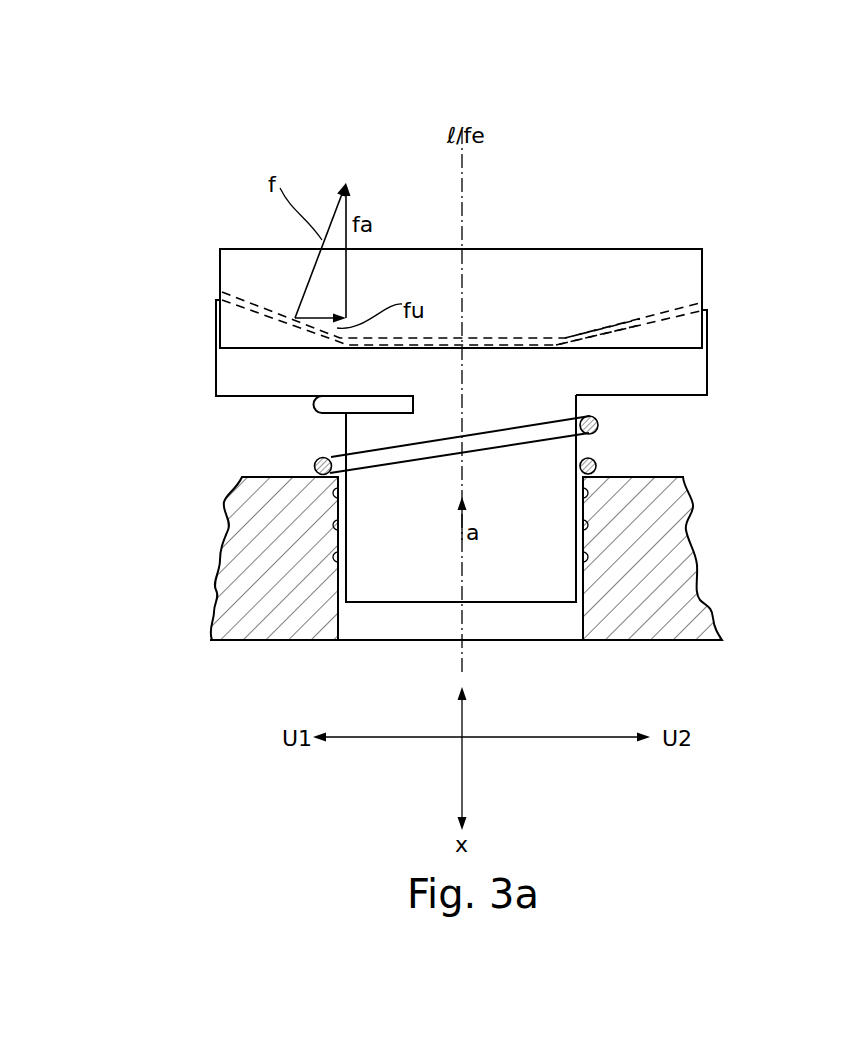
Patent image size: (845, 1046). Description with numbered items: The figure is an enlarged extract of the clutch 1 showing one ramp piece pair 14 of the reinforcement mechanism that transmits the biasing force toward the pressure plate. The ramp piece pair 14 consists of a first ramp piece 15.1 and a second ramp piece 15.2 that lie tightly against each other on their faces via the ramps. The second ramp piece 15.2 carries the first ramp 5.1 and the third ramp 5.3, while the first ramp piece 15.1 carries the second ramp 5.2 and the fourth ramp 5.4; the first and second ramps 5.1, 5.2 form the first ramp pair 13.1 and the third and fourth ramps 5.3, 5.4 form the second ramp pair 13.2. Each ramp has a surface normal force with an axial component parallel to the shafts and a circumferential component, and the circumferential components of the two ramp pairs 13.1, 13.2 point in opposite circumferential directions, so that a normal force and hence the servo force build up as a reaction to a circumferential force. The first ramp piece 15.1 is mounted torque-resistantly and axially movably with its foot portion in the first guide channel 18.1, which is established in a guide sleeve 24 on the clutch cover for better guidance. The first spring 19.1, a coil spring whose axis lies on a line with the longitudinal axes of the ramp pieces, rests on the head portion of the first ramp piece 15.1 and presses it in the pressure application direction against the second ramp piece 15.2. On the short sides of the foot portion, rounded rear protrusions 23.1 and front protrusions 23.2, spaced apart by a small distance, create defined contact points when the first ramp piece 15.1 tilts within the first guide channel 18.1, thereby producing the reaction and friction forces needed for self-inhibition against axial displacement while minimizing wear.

The clutch 1 is at (575, 155).
The first ramp 5.1 is at (260, 306).
The second ramp 5.2 is at (263, 312).
The third ramp 5.3 is at (627, 327).
The fourth ramp 5.4 is at (620, 331).
The first ramp pair 13.1 is at (248, 262).
The second ramp pair 13.2 is at (715, 275).
The ramp piece pair 14 is at (495, 286).
The first ramp piece 15.1 is at (684, 380).
The second ramp piece 15.2 is at (624, 246).
The first guide channel 18.1 is at (363, 627).
The first spring 19.1 is at (316, 461).
The rear protrusion 23.1 is at (337, 491).
The front protrusion 23.2 is at (337, 534).
The guide sleeve 24 is at (690, 623).